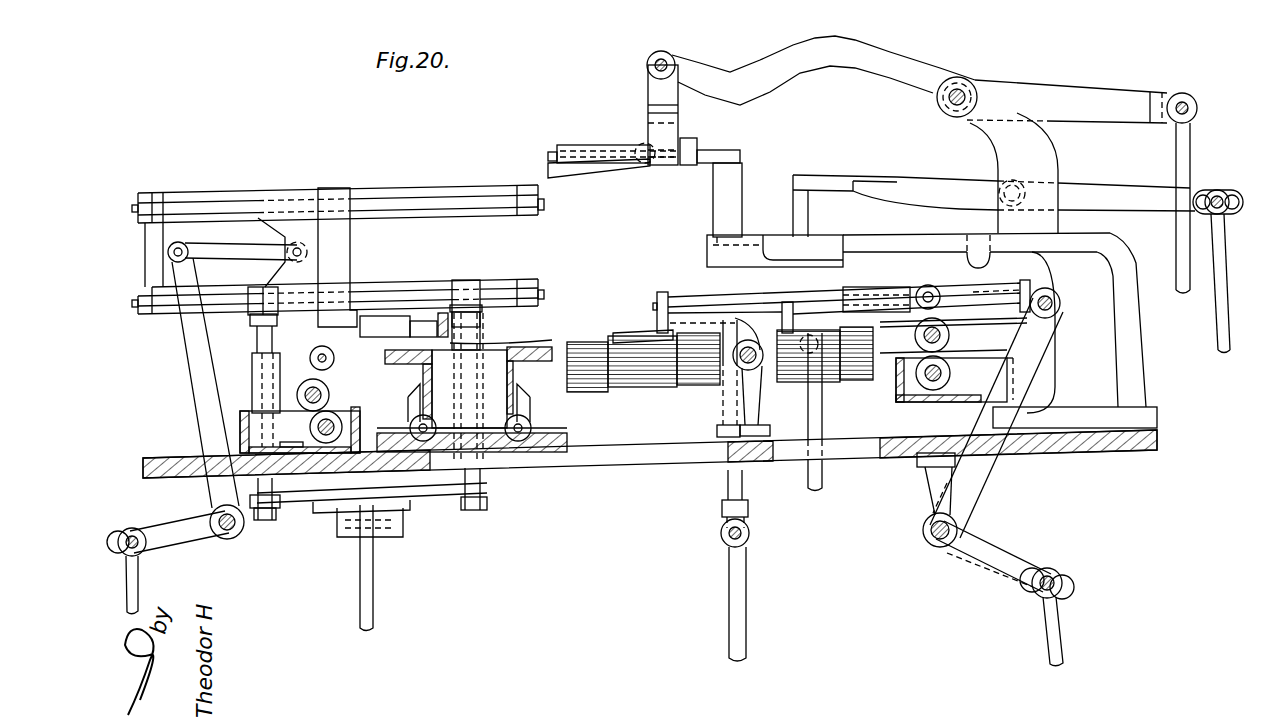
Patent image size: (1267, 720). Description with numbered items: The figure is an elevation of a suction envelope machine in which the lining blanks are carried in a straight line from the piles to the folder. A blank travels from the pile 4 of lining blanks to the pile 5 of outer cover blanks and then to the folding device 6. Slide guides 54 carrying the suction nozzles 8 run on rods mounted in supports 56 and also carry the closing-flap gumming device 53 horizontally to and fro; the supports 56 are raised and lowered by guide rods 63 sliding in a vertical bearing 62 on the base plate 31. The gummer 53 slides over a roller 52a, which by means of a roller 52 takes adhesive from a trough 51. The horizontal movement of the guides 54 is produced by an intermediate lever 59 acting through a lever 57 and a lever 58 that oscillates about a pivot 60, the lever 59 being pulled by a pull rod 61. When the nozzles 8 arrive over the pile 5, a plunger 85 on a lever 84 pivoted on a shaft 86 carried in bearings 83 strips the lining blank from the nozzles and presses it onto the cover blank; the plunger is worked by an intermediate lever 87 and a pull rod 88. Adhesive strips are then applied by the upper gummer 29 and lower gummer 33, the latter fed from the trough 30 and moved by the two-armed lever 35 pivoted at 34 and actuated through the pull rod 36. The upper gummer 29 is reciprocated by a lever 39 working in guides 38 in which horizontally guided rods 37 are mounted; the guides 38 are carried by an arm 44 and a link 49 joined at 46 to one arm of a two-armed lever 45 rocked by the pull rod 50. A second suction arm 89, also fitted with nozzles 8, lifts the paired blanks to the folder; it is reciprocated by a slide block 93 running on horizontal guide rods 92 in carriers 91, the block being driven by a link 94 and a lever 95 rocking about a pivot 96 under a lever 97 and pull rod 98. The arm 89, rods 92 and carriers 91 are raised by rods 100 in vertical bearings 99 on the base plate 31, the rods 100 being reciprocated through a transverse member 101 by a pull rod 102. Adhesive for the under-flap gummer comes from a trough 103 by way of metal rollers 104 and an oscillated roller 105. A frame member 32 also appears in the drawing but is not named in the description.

The pile of lining blanks 4 is at (852, 378).
The pile of outer cover blanks 5 is at (630, 370).
The folding device 6 is at (495, 378).
The suction nozzles 8 is at (448, 334).
The upper gummer 29 is at (738, 184).
The trough 30 is at (755, 258).
The base plate 31 is at (143, 466).
The frame 32 is at (1125, 339).
The lower gummer 33 is at (740, 240).
The pivot 34 is at (1016, 191).
The two-armed lever 35 is at (945, 183).
The pull rod 36 is at (1224, 318).
The horizontally guided rods 37 is at (551, 152).
The guides 38 is at (578, 150).
The lever 39 is at (558, 176).
The arm 44 is at (685, 140).
The two-armed lever 45 is at (757, 73).
The connection point 46 is at (672, 58).
The link 49 is at (652, 97).
The pull rod 50 is at (1186, 167).
The trough 51 is at (970, 400).
The roller 52 is at (925, 392).
The roller 52a is at (895, 368).
The gumming device for the closing flaps 53 is at (913, 330).
The slide guides 54 is at (875, 290).
The supports 56 is at (665, 292).
The lever 57 is at (938, 291).
The lever 58 is at (1019, 345).
The intermediate lever 59 is at (1000, 550).
The pivot 60 is at (925, 538).
The pull rod 61 is at (1058, 640).
The vertical bearing 62 is at (722, 418).
The guide rods 63 is at (742, 481).
The bearings 83 is at (757, 404).
The lever 84 is at (716, 322).
The plunger 85 is at (645, 328).
The shaft 86 is at (738, 366).
The intermediate lever 87 is at (766, 362).
The pull rod 88 is at (823, 481).
The second suction arm 89 is at (400, 322).
The carriers 91 is at (158, 203).
The horizontal guide rods 92 is at (393, 203).
The slide block 93 is at (342, 246).
The link 94 is at (196, 252).
The lever 95 is at (200, 408).
The pivot 96 is at (236, 535).
The lever 97 is at (184, 546).
The pull rod 98 is at (141, 600).
The vertical bearings 99 is at (257, 382).
The rods 100 is at (268, 340).
The transverse member 101 is at (385, 528).
The pull rod 102 is at (375, 605).
The trough 103 is at (352, 420).
The metal rollers 104 is at (330, 394).
The roller 105 is at (335, 360).